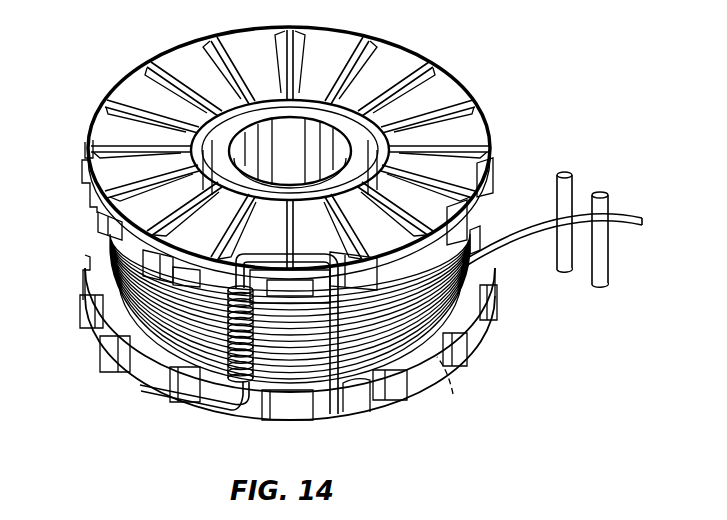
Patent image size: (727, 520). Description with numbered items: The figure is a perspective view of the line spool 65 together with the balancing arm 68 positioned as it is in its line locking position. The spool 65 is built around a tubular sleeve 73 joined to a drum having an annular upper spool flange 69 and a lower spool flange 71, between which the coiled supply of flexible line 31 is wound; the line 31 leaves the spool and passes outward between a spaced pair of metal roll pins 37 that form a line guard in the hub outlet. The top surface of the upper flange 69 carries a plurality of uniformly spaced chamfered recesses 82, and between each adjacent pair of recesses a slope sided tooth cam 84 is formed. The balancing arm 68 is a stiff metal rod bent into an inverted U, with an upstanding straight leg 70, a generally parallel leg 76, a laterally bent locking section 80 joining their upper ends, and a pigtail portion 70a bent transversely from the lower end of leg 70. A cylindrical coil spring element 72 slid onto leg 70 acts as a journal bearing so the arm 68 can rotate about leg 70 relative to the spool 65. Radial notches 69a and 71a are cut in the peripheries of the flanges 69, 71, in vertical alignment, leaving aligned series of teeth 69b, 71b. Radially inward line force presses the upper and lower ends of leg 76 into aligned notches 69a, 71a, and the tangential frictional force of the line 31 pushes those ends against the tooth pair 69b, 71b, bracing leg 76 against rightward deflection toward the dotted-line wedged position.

The line spool 65 is at (466, 76).
The upper spool flange 69 is at (398, 20).
The chamfered recess 82 is at (193, 77).
The slope sided tooth cam 84 is at (262, 45).
The tubular sleeve 73 is at (226, 150).
The radial notch 69a is at (318, 253).
The tooth 69b is at (84, 168).
The upstanding straight leg 70 is at (216, 263).
The pigtail portion 70a is at (185, 402).
The locking section 80 is at (258, 266).
The balancing arm 68 is at (233, 414).
The coil spring element 72 is at (228, 383).
The lower spool flange 71 is at (104, 359).
The radial notch 71a is at (88, 315).
The tooth 71b is at (103, 342).
The leg 76 is at (348, 410).
The flexible line 31 is at (530, 243).
The metal roll pins 37 is at (572, 178).